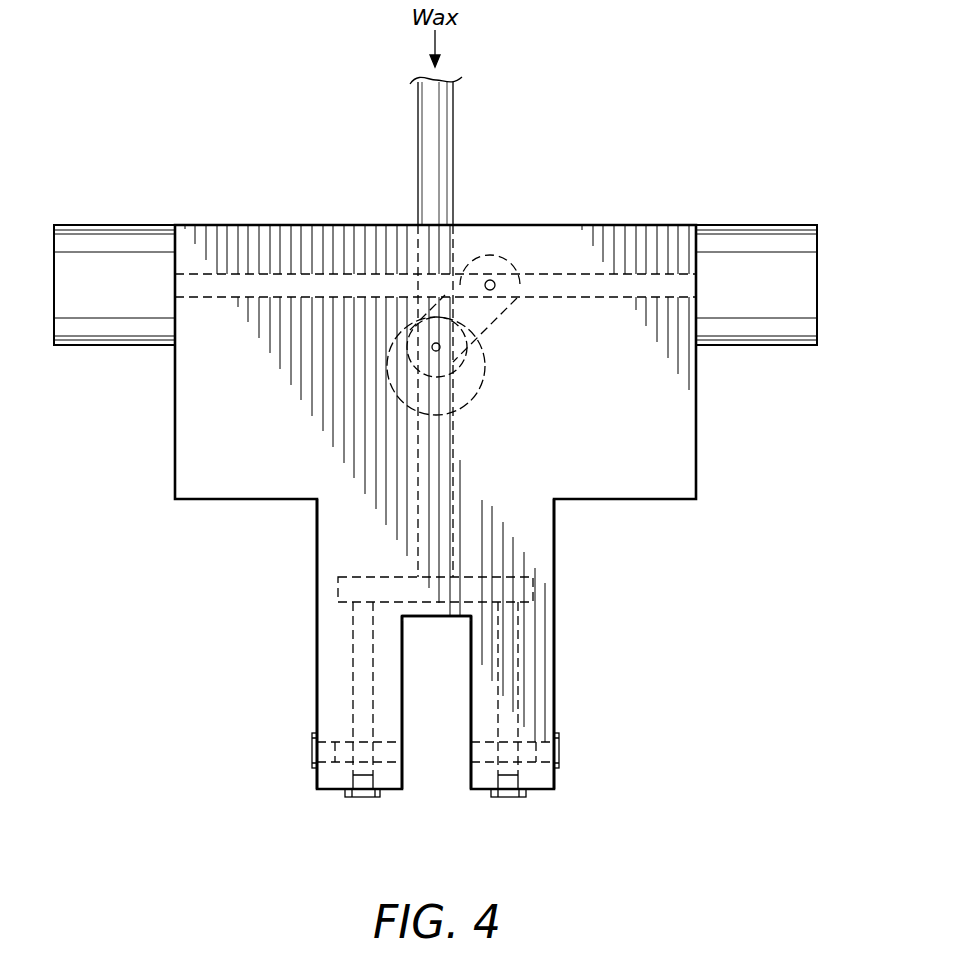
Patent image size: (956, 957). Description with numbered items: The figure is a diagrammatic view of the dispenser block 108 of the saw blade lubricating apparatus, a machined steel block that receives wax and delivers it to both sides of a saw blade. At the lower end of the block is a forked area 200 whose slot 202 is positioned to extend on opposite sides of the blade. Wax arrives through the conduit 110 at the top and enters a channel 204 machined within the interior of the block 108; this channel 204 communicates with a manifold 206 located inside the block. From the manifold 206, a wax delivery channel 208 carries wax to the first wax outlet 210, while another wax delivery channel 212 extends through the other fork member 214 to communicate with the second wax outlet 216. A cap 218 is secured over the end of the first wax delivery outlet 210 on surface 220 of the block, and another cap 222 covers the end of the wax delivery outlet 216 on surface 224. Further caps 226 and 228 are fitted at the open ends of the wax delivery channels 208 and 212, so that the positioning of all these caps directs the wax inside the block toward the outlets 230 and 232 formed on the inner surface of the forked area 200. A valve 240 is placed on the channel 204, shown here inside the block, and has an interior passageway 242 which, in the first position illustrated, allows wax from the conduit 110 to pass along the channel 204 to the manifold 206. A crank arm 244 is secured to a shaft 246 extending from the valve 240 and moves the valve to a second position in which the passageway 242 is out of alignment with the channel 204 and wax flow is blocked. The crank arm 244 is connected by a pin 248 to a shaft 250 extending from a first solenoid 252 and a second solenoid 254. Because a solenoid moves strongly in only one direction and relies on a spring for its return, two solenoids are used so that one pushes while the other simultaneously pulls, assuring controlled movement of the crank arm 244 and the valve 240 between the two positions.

The dispenser block 108 is at (683, 443).
The conduit 110 is at (445, 167).
The forked area 200 is at (436, 636).
The slot 202 is at (436, 661).
The channel 204 is at (445, 485).
The manifold 206 is at (463, 583).
The wax delivery channel 208 is at (357, 635).
The first wax outlet 210 is at (347, 742).
The wax delivery channel 212 is at (515, 635).
The fork member 214 is at (535, 672).
The second wax outlet 216 is at (527, 742).
The cap 218 is at (312, 745).
The surface 220 is at (317, 560).
The cap 222 is at (559, 746).
The surface 224 is at (554, 560).
The cap 226 is at (345, 795).
The cap 228 is at (527, 795).
The outlet 230 is at (403, 750).
The outlet 232 is at (472, 750).
The valve 240 is at (470, 393).
The interior passageway 242 is at (430, 397).
The crank arm 244 is at (487, 322).
The shaft 246 is at (433, 344).
The pin 248 is at (494, 281).
The shaft 250 is at (593, 298).
The first solenoid 252 is at (87, 233).
The second solenoid 254 is at (720, 233).